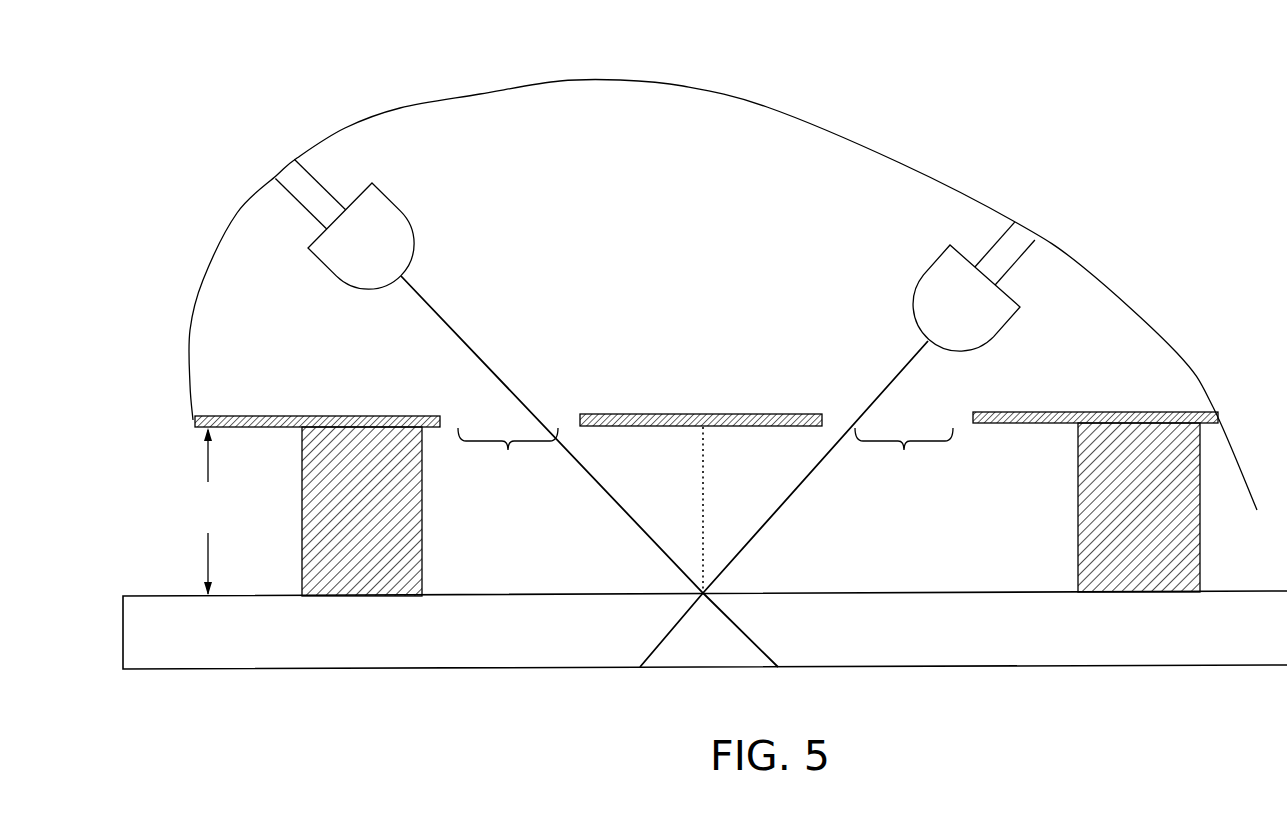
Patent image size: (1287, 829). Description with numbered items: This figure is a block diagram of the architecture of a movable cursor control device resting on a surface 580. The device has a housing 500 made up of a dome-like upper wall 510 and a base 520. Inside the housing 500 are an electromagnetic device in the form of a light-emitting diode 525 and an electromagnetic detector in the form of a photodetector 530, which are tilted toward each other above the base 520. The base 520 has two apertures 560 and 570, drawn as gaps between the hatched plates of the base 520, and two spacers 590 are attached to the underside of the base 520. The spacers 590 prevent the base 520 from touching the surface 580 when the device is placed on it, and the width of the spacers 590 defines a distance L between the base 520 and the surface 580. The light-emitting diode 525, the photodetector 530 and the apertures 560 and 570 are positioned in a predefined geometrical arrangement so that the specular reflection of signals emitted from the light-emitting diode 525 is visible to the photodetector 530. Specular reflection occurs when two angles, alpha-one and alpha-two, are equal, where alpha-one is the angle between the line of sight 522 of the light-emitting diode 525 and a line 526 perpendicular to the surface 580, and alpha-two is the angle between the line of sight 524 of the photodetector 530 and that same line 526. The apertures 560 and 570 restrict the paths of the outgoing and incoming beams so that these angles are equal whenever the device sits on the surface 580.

The housing 500 is at (191, 279).
The upper wall 510 is at (630, 82).
The base 520 is at (1246, 477).
The line of sight of LED 522 is at (457, 330).
The line of sight of photodetector 524 is at (878, 383).
The light-emitting diode 525 is at (433, 192).
The line perpendicular to the surface 526 is at (698, 452).
The photodetector 530 is at (1099, 196).
The aperture 560 is at (904, 456).
The aperture 570 is at (508, 457).
The surface 580 is at (137, 595).
The spacer 590 is at (302, 520).